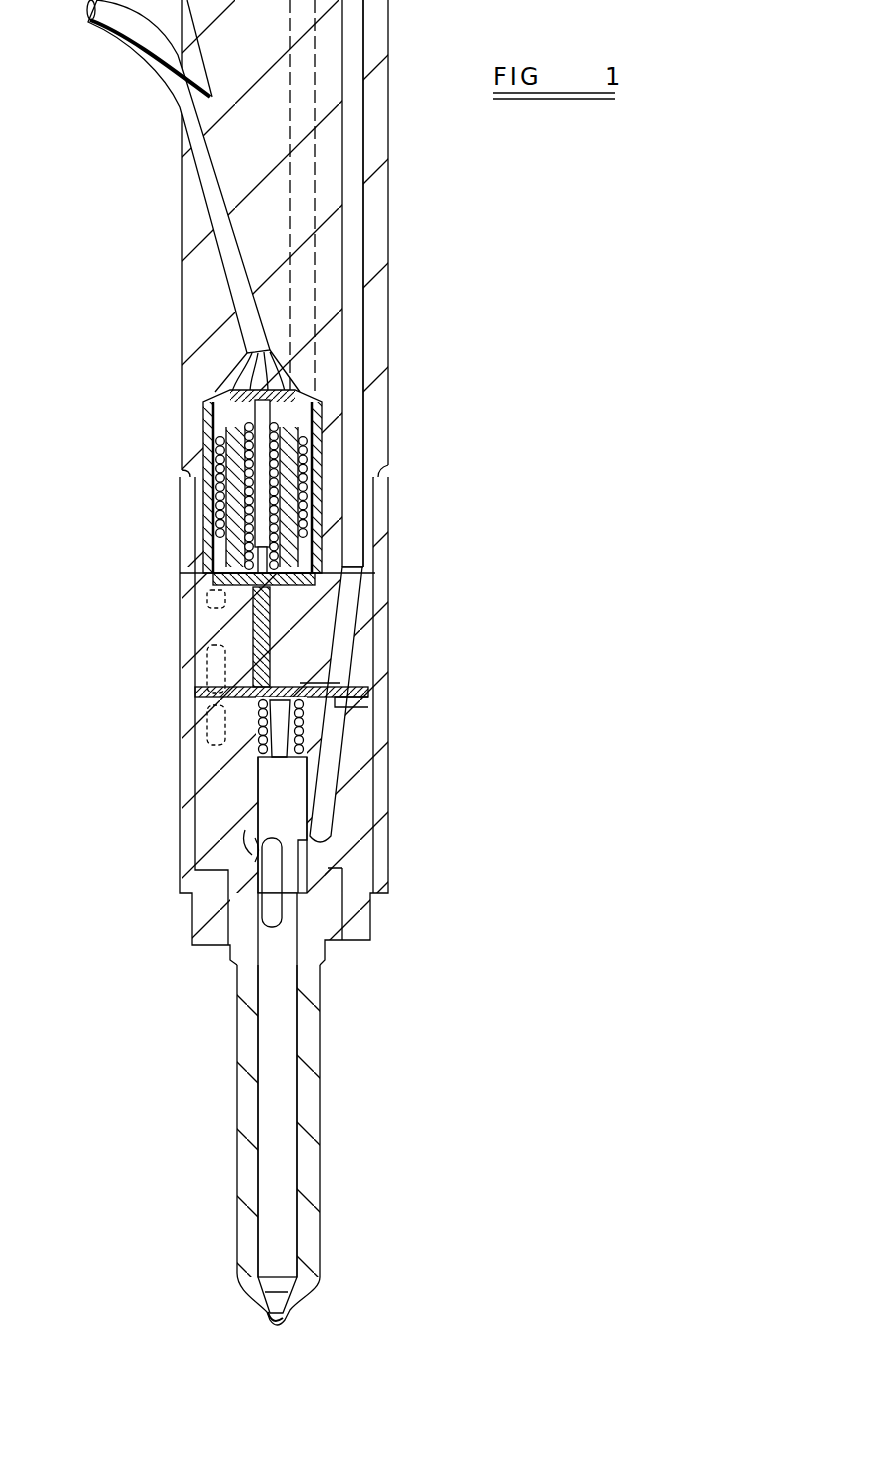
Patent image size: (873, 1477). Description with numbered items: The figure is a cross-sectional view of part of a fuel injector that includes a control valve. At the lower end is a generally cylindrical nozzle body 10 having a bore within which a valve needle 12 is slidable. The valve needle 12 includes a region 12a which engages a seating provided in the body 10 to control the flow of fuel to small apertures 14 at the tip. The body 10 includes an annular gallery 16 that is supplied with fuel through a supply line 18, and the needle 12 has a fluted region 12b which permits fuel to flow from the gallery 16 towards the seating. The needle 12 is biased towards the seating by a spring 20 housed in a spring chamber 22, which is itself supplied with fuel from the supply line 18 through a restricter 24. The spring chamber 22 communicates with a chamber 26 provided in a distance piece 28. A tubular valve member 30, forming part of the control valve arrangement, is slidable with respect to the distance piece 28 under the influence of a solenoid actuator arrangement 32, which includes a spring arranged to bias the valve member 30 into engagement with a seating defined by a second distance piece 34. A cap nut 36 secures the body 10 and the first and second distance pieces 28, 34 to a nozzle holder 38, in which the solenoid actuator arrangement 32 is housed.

The nozzle body 10 is at (313, 1030).
The valve needle 12 is at (270, 1075).
The region of the valve needle 12a is at (293, 1252).
The fluted region 12b is at (268, 888).
The small apertures 14 is at (263, 1308).
The annular gallery 16 is at (305, 850).
The supply line 18 is at (335, 752).
The spring 20 is at (257, 722).
The spring chamber 22 is at (257, 740).
The restricter 24 is at (335, 707).
The chamber 26 is at (296, 685).
The distance piece 28 is at (367, 623).
The tubular valve member 30 is at (247, 632).
The solenoid actuator arrangement 32 is at (170, 466).
The second distance piece 34 is at (197, 687).
The cap nut 36 is at (382, 570).
The nozzle holder 38 is at (378, 413).